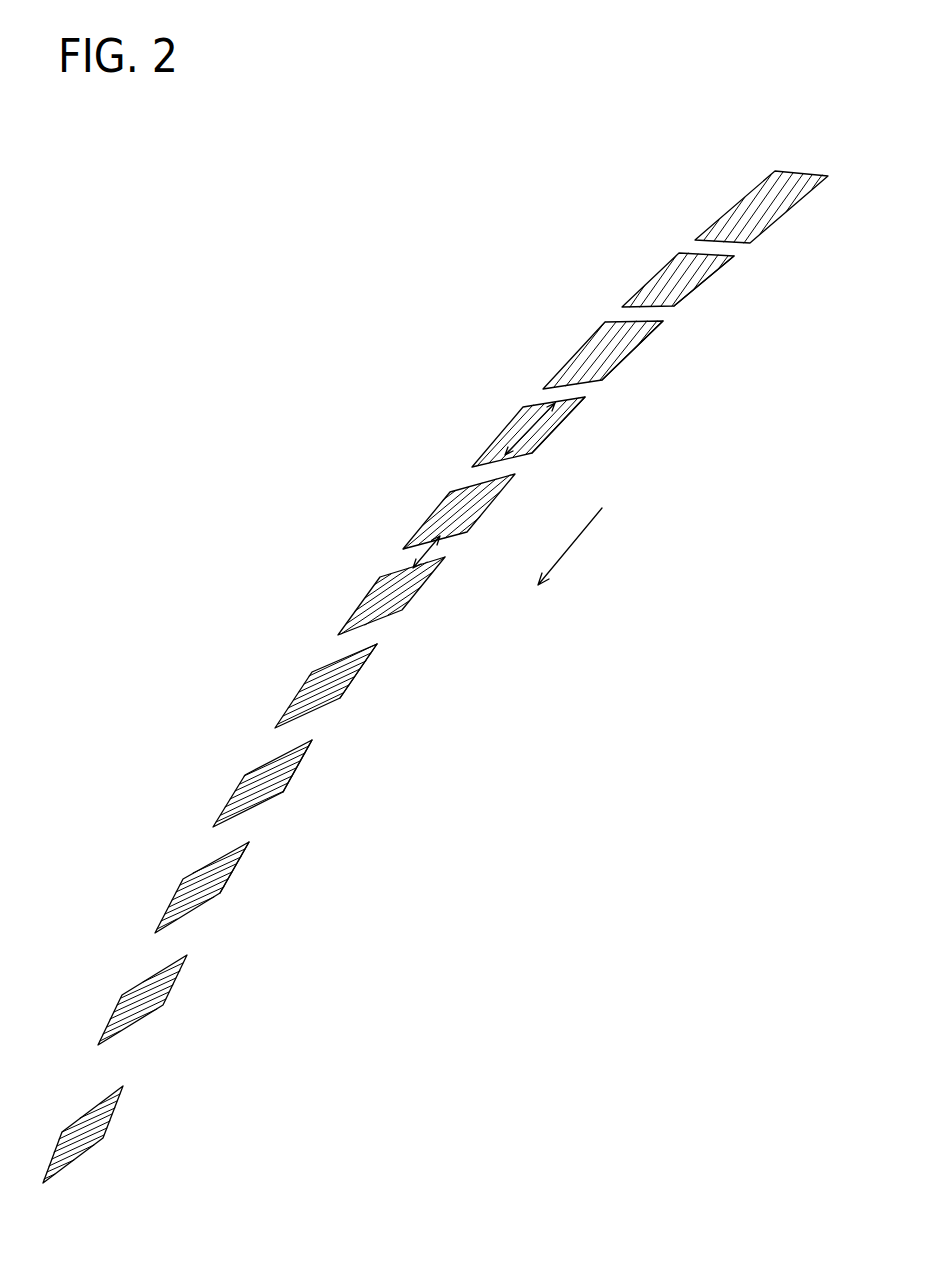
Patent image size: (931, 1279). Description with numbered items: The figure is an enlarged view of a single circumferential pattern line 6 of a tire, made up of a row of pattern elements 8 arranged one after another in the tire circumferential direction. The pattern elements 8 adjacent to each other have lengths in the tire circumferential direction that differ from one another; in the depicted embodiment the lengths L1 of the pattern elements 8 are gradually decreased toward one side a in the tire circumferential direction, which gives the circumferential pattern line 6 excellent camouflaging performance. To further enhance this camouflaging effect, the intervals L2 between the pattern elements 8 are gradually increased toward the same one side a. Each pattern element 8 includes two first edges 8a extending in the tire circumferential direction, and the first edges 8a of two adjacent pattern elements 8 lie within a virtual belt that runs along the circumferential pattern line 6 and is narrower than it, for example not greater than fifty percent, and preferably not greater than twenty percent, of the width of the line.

The circumferential pattern line 6 is at (423, 318).
The pattern element 8 is at (747, 195).
The first edge 8a is at (709, 277).
The length in the tire circumferential direction L1 is at (519, 412).
The interval between the pattern elements L2 is at (410, 545).
The one side in the tire circumferential direction a is at (562, 561).